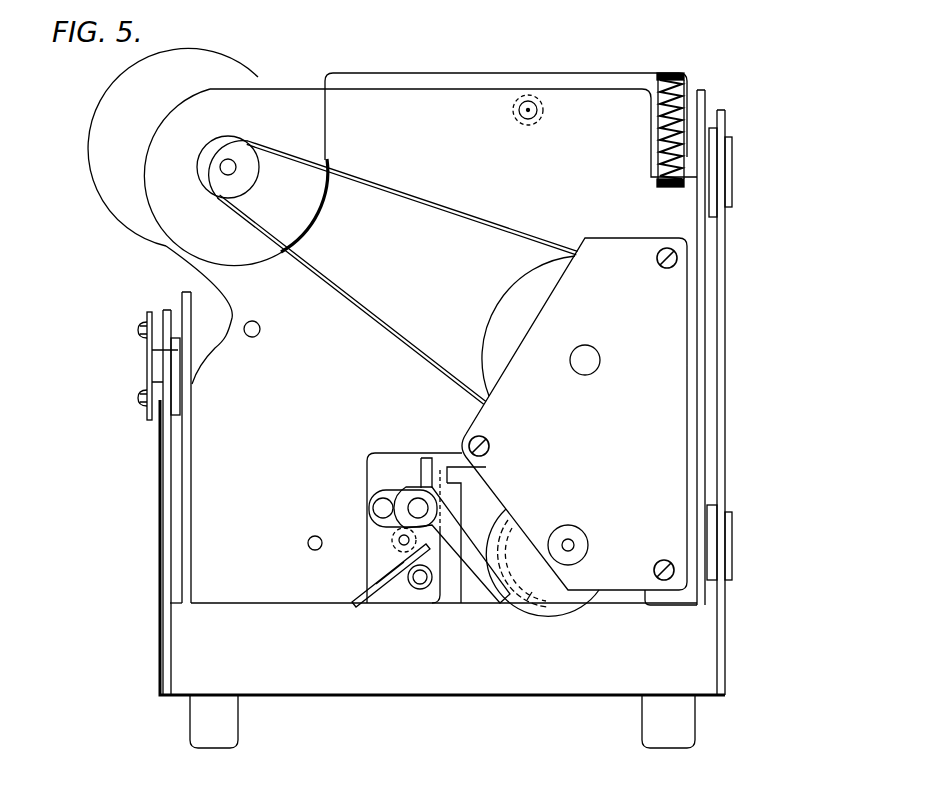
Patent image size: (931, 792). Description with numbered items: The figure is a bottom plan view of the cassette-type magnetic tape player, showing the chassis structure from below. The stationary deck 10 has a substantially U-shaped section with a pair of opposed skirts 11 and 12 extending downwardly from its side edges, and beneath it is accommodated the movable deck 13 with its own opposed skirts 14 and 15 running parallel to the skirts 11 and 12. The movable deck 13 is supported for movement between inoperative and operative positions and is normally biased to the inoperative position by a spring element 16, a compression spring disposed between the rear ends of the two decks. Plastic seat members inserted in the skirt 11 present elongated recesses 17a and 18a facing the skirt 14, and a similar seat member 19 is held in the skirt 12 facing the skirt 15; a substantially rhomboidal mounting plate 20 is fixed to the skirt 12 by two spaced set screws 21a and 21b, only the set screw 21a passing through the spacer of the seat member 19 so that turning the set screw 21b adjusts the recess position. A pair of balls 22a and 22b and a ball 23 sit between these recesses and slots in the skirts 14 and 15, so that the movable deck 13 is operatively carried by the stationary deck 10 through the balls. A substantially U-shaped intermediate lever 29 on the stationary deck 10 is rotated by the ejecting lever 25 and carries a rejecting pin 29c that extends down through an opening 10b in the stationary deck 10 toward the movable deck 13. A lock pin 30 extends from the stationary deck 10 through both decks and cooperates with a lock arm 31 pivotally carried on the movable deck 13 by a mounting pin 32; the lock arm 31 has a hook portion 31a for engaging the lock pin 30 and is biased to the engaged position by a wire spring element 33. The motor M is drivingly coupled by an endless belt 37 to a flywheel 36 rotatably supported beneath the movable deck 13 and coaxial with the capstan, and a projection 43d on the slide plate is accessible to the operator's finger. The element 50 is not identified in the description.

The motor M is at (143, 147).
The endless belt 37 is at (410, 195).
The flywheel 36 is at (520, 290).
The movable deck 13 is at (585, 118).
The spring element 16 is at (680, 120).
The skirt 14 is at (706, 386).
The skirt 11 is at (727, 300).
The ball 22a is at (716, 150).
The elongated recess 17a is at (733, 186).
The ball 22b is at (717, 520).
The elongated recess 18a is at (733, 550).
The tension roller 50 is at (553, 618).
The skirt 12 is at (186, 512).
The mounting plate 20 is at (155, 356).
The skirt 15 is at (163, 562).
The ball 23 is at (150, 346).
The seat member 19 is at (160, 382).
The set screw 21b is at (145, 328).
The set screw 21a is at (145, 400).
The stationary deck 10 is at (600, 672).
The ejecting lever 25 is at (228, 718).
The projection 43d is at (680, 720).
The opening 10b is at (393, 470).
The intermediate lever 29 is at (376, 500).
The rejecting pin 29c is at (374, 508).
The lock arm 31 is at (430, 470).
The hook portion 31a is at (398, 541).
The mounting pin 32 is at (420, 590).
The lock pin 30 is at (367, 585).
The spring element 33 is at (394, 598).